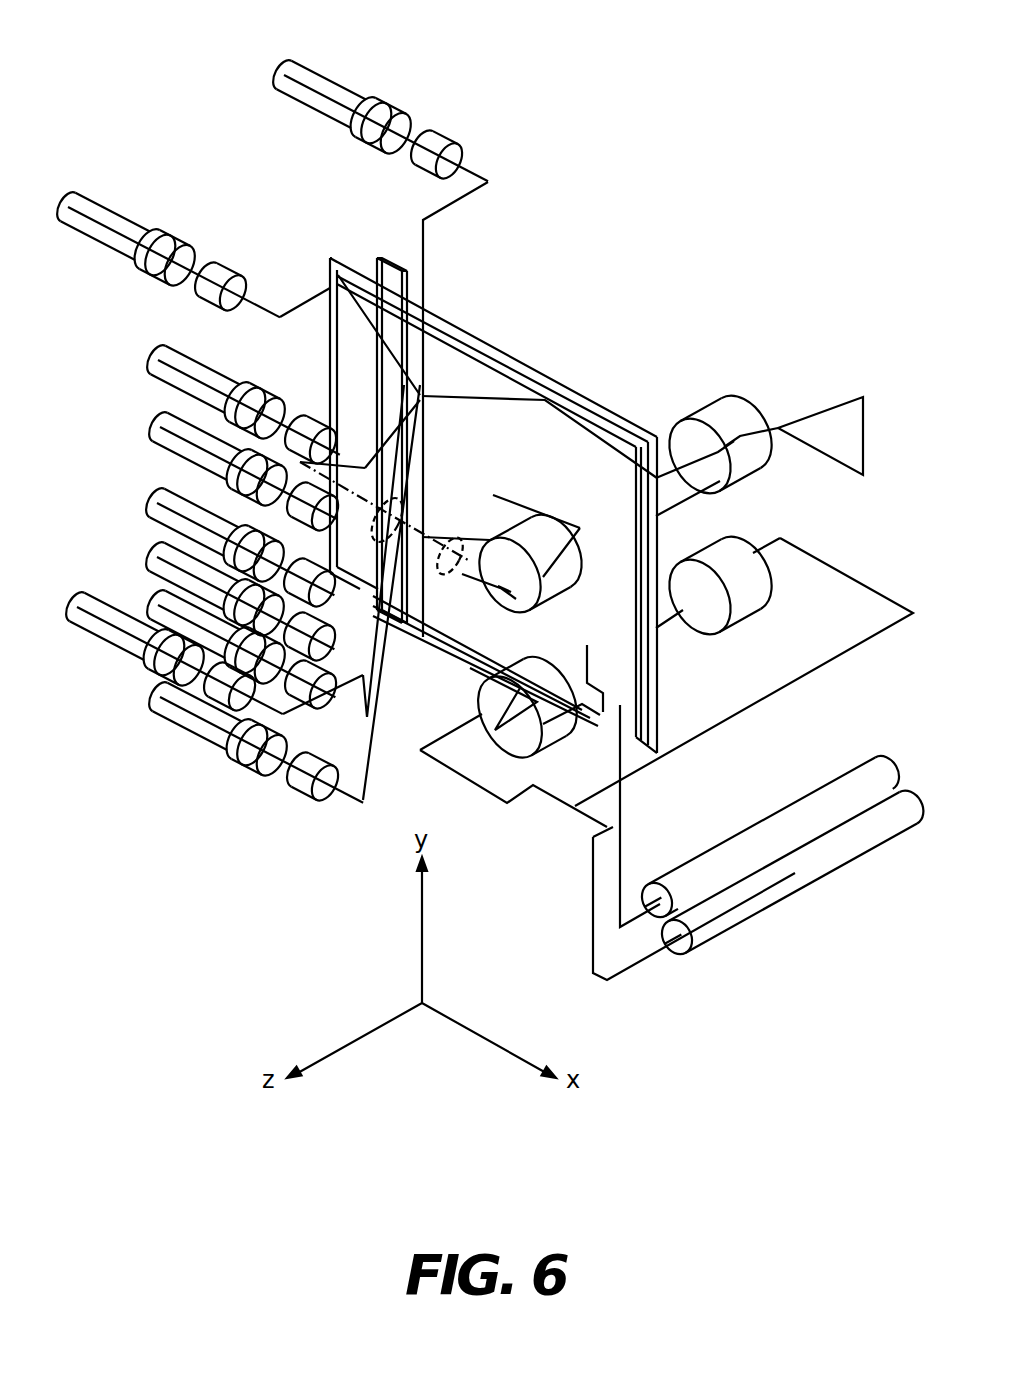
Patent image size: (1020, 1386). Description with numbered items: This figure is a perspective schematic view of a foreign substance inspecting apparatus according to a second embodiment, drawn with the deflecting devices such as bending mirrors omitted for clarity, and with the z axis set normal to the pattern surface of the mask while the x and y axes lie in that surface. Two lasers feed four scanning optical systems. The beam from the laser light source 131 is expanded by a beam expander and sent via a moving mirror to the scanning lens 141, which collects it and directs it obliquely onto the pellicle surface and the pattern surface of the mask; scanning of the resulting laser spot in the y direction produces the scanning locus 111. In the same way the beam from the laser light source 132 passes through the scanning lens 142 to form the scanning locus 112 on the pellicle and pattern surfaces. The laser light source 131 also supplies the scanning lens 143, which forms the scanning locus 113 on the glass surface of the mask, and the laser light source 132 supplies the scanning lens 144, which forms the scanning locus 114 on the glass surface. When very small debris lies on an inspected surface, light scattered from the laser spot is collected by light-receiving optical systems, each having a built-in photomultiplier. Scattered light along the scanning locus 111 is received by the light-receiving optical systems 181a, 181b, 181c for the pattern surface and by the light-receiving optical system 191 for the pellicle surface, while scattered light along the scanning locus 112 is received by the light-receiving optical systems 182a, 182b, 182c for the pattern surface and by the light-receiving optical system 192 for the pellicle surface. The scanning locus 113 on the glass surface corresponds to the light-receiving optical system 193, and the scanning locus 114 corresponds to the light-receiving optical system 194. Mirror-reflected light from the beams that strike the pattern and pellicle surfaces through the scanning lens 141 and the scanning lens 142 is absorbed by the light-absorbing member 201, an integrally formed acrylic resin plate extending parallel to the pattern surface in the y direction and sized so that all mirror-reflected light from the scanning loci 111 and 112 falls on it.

The scanning locus 111 is at (428, 312).
The scanning locus 112 is at (418, 625).
The scanning locus 113 is at (428, 362).
The scanning locus 114 is at (462, 615).
The laser light source 131 is at (728, 840).
The laser light source 132 is at (758, 912).
The scanning lens 141 is at (592, 530).
The scanning lens 142 is at (568, 720).
The scanning lens 143 is at (722, 404).
The scanning lens 144 is at (760, 620).
The light-receiving optical system for the pattern surface 181a is at (207, 382).
The light-receiving optical system for the pattern surface 181b is at (158, 554).
The light-receiving optical system for the pattern surface 181c is at (159, 601).
The light-receiving optical system for the pattern surface 182a is at (190, 736).
The light-receiving optical system for the pattern surface 182b is at (160, 497).
The light-receiving optical system for the pattern surface 182c is at (160, 420).
The light-receiving optical system for the pellicle surface 191 is at (120, 214).
The light-receiving optical system for the pellicle surface 192 is at (90, 641).
The light-receiving optical system for the glass surface 193 is at (345, 78).
The light-receiving optical system for the glass surface 194 is at (294, 413).
The light-absorbing member 201 is at (389, 258).